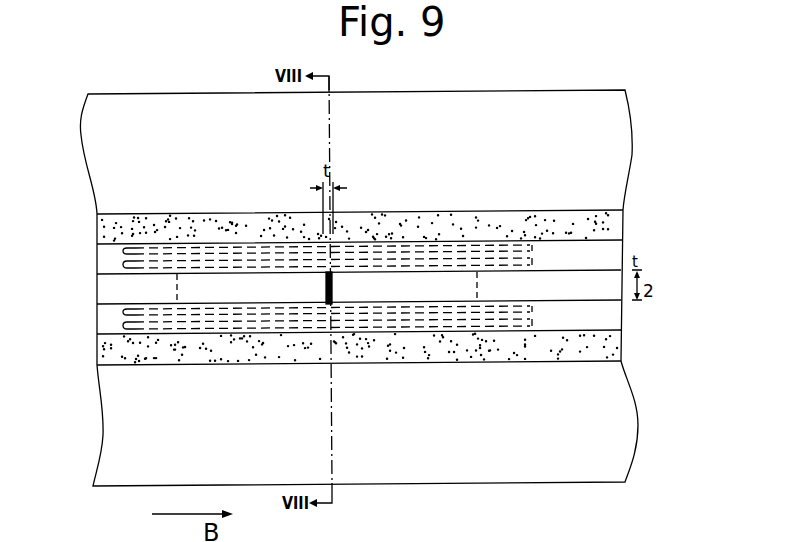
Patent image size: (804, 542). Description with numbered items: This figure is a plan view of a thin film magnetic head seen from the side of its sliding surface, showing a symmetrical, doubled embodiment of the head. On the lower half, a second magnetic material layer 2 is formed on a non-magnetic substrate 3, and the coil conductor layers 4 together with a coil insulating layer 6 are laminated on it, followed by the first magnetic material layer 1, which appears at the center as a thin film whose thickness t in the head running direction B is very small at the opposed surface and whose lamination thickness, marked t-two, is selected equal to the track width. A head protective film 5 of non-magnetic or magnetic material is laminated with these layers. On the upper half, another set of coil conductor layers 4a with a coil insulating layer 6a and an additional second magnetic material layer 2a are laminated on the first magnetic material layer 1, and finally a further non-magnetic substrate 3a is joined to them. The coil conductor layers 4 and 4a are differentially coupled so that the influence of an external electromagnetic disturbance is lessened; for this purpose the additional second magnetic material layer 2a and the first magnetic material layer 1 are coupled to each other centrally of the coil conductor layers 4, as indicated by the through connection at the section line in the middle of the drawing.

The first magnetic material layer 1 is at (330, 273).
The second magnetic material layer 2 is at (607, 350).
The additional second magnetic material layer 2a is at (607, 224).
The non-magnetic substrate 3 is at (620, 428).
The non-magnetic substrate 3a is at (613, 139).
The coil conductor layers 4 is at (532, 309).
The coil conductor layers 4a is at (532, 248).
The head protective film 5 is at (90, 290).
The coil insulating layer 6 is at (103, 320).
The coil insulating layer 6a is at (104, 262).